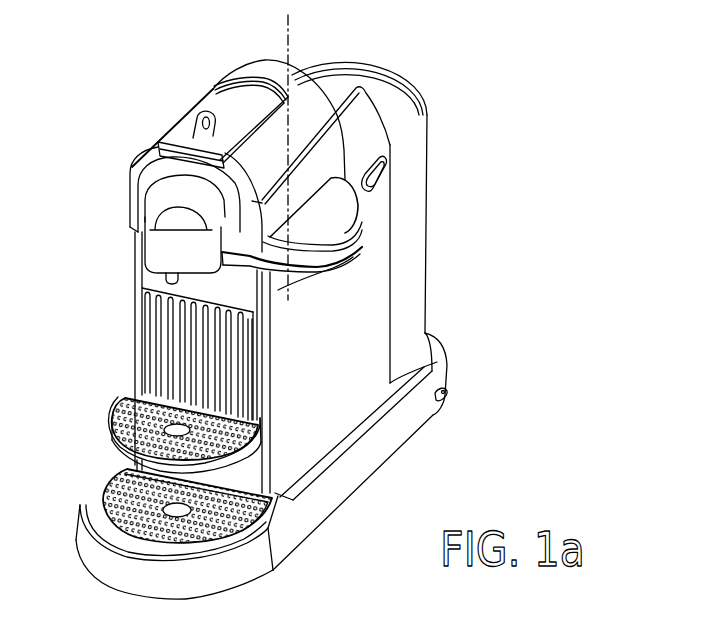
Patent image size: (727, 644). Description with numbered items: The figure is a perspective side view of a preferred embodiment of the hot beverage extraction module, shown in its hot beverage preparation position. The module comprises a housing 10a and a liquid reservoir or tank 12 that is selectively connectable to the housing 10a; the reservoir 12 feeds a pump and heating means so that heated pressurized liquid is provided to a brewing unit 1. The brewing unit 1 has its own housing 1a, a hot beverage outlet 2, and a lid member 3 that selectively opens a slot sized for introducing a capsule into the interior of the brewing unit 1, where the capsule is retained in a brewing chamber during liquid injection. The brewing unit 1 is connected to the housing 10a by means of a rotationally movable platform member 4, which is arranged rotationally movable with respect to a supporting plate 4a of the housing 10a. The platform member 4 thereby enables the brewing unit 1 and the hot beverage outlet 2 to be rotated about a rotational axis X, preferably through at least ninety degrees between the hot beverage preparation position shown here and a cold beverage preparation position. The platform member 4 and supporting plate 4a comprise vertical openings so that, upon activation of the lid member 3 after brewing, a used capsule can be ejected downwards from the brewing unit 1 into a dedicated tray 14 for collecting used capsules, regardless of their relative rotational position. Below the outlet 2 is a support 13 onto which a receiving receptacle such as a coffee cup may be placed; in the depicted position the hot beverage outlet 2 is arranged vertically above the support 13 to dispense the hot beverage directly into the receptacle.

The brewing unit 1 is at (245, 70).
The housing 1a is at (324, 127).
The hot beverage outlet 2 is at (165, 276).
The lid member 3 is at (223, 107).
The platform member 4 is at (327, 203).
The supporting plate 4a is at (330, 252).
The housing 10a is at (354, 395).
The liquid reservoir or tank 12 is at (410, 158).
The support 13 is at (122, 425).
The tray 14 is at (155, 347).